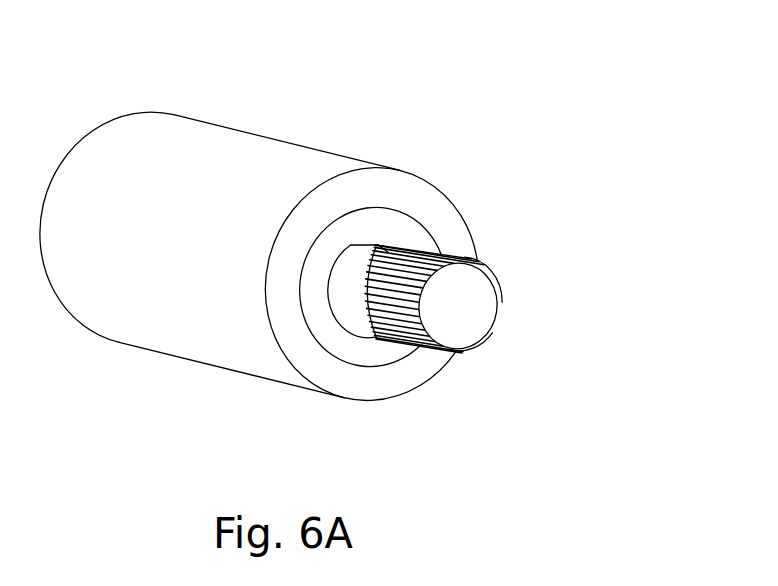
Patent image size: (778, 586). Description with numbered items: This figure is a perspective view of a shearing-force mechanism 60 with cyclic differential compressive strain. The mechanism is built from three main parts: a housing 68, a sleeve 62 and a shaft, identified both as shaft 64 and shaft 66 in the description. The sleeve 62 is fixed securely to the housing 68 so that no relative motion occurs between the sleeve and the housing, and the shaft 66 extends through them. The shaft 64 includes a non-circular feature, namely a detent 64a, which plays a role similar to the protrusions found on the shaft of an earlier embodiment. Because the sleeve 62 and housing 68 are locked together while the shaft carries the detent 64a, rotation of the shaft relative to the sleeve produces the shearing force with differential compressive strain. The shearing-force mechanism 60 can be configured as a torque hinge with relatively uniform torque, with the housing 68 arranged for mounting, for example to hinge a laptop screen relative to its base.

The shearing-force mechanism 60 is at (330, 100).
The sleeve 62 is at (420, 240).
The shaft 64 is at (355, 298).
The detent 64a is at (378, 248).
The shaft 66 is at (447, 248).
The housing 68 is at (157, 152).